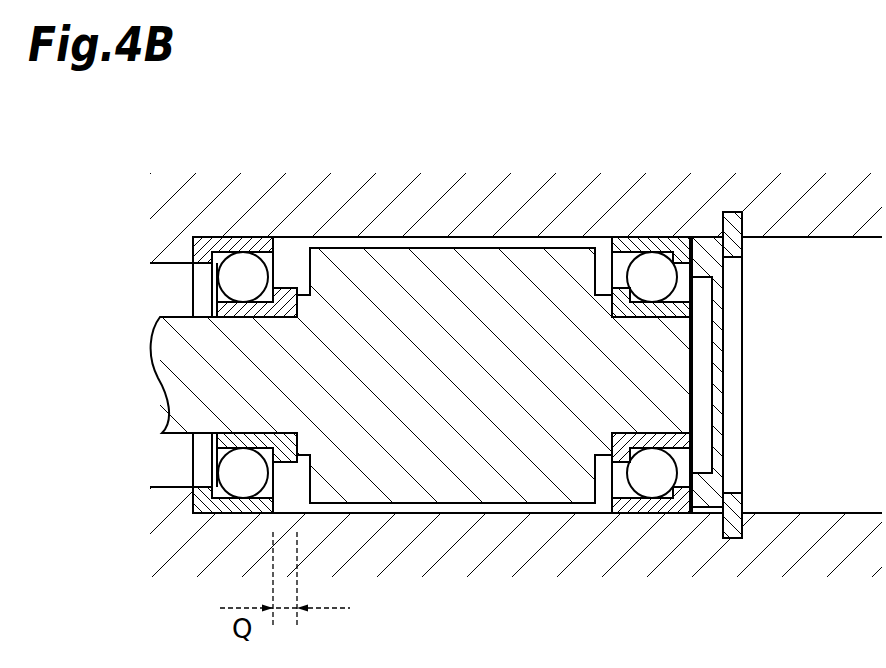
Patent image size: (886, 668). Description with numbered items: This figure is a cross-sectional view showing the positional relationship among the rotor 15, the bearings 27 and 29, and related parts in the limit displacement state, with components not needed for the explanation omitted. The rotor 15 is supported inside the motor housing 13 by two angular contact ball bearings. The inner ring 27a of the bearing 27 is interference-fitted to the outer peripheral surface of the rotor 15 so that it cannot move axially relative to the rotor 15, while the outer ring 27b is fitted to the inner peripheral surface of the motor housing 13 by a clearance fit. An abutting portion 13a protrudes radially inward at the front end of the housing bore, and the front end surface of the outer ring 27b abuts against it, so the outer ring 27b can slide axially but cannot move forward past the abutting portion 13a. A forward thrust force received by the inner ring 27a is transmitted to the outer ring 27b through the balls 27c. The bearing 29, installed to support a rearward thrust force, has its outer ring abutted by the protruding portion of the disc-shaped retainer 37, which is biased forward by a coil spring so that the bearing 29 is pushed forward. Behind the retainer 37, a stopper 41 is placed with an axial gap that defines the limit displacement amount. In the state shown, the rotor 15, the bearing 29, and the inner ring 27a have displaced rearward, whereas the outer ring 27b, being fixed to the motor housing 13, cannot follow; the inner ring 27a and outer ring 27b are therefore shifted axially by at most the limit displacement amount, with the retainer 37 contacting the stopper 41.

The motor housing 13 is at (404, 215).
The abutting portion 13a is at (173, 252).
The rotor 15 is at (447, 490).
The bearing 27 is at (208, 299).
The inner ring 27a is at (292, 282).
The outer ring 27b is at (215, 246).
The balls 27c is at (243, 290).
The bearing 29 is at (659, 226).
The retainer 37 is at (720, 381).
The stopper 41 is at (742, 257).